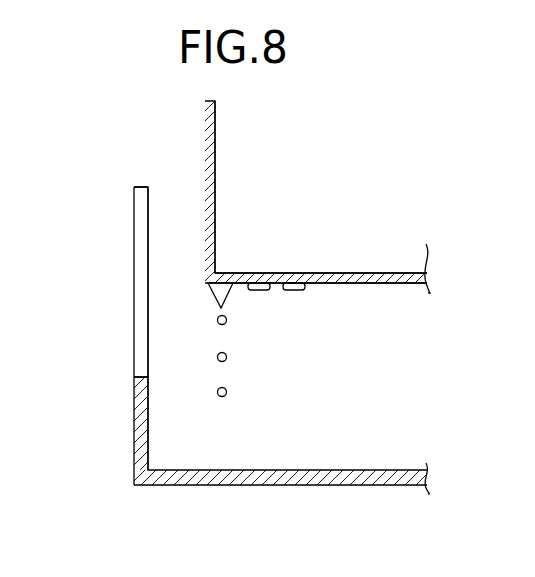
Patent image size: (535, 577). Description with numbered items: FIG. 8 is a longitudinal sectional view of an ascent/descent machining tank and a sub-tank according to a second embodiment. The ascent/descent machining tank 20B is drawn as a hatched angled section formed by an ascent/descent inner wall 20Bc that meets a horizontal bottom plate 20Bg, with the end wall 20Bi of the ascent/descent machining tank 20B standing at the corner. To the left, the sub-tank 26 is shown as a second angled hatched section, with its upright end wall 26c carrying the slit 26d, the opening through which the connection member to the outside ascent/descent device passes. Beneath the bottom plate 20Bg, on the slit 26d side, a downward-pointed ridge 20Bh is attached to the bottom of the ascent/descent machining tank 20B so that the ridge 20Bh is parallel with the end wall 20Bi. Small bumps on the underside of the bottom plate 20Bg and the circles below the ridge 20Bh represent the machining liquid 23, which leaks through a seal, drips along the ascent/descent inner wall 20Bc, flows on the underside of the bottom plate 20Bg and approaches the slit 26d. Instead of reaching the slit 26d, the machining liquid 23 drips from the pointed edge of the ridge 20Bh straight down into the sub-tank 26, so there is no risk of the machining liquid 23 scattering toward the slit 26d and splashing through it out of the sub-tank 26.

The ascent/descent machining tank 20B is at (208, 118).
The end wall 20Bi is at (208, 152).
The ascent/descent inner wall 20Bc is at (333, 163).
The bottom plate 20Bg is at (389, 284).
The ridge 20Bh is at (210, 293).
The machining liquid 23 is at (257, 291).
The sub-tank 26 is at (235, 487).
The slit 26d is at (141, 315).
The end wall 26c is at (141, 400).